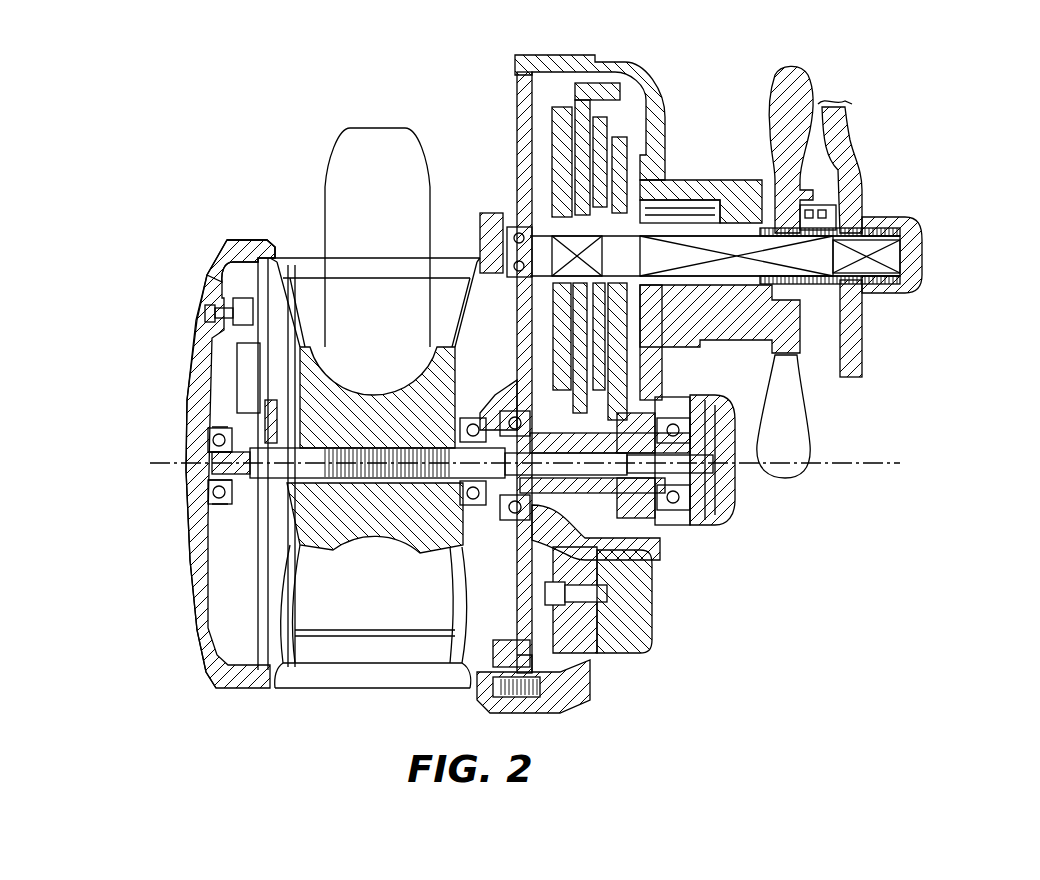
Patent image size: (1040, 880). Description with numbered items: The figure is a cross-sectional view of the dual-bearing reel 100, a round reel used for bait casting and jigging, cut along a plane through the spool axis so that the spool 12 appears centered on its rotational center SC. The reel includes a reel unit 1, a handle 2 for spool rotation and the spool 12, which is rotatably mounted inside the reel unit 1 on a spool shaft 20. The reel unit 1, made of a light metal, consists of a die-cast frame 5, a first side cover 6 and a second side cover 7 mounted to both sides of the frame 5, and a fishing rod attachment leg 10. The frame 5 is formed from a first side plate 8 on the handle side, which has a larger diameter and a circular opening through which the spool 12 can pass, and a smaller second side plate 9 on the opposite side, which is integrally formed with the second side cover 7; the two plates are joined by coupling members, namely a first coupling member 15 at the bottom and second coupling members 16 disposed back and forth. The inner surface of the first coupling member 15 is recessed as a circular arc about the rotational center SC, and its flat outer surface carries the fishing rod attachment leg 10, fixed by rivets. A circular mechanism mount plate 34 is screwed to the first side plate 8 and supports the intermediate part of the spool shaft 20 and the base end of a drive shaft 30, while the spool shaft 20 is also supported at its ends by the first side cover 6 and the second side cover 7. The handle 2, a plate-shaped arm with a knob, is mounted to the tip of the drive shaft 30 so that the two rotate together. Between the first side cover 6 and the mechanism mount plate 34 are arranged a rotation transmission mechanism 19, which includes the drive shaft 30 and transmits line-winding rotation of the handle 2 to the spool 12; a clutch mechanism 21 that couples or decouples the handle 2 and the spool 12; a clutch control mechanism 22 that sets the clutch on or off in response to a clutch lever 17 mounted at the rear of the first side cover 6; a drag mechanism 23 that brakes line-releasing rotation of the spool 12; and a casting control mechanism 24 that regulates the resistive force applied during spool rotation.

The reel unit 1 is at (252, 218).
The handle 2 is at (868, 162).
The frame 5 is at (217, 230).
The first side cover 6 is at (583, 670).
The second side cover 7 is at (202, 362).
The first side plate 8 is at (495, 212).
The second side plate 9 is at (247, 240).
The fishing rod attachment leg 10 is at (363, 157).
The spool 12 is at (373, 538).
The first coupling member 15 is at (377, 353).
The second coupling member 16 is at (392, 258).
The clutch lever 17 is at (643, 630).
The rotation transmission mechanism 19 is at (633, 523).
The spool shaft 20 is at (313, 387).
The clutch mechanism 21 is at (488, 502).
The clutch control mechanism 22 is at (575, 530).
The drag mechanism 23 is at (625, 121).
The casting control mechanism 24 is at (733, 532).
The drive shaft 30 is at (660, 250).
The mechanism mount plate 34 is at (523, 373).
The dual-bearing reel 100 is at (890, 443).
The rotational center SC is at (156, 463).